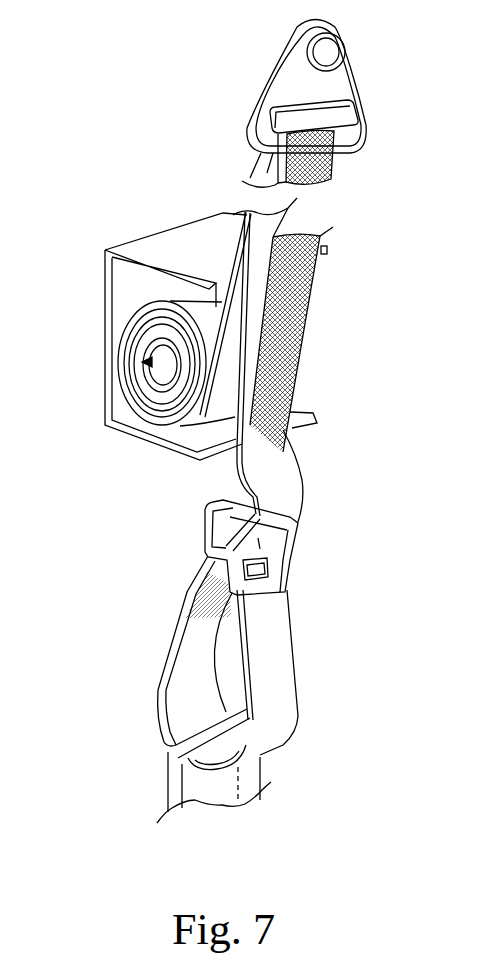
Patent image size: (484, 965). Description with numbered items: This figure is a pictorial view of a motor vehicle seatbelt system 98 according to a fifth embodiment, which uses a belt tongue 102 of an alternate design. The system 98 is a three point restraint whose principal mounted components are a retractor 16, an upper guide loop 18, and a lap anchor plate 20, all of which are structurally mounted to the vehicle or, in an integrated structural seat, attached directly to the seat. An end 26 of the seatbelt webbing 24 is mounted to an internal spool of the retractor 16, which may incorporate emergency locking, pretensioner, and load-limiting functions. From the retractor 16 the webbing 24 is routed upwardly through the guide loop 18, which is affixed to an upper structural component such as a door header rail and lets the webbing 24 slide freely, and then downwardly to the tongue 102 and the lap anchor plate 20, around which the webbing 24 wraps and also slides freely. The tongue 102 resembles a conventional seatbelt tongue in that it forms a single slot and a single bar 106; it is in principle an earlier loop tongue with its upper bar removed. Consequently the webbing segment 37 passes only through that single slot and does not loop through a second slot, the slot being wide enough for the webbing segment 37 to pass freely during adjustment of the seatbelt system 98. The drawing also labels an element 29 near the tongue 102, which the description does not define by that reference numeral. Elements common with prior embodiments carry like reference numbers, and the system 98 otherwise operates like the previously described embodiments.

The upper guide loop 18 is at (343, 83).
The seatbelt system 98 is at (380, 256).
The end of seatbelt webbing 26 is at (133, 316).
The retractor 16 is at (140, 358).
The webbing 24 is at (282, 424).
The webbing segment 37 is at (283, 483).
The tongue 102 is at (288, 521).
The buckle 29 is at (290, 549).
The bar 106 is at (210, 512).
The lap anchor plate 20 is at (168, 748).